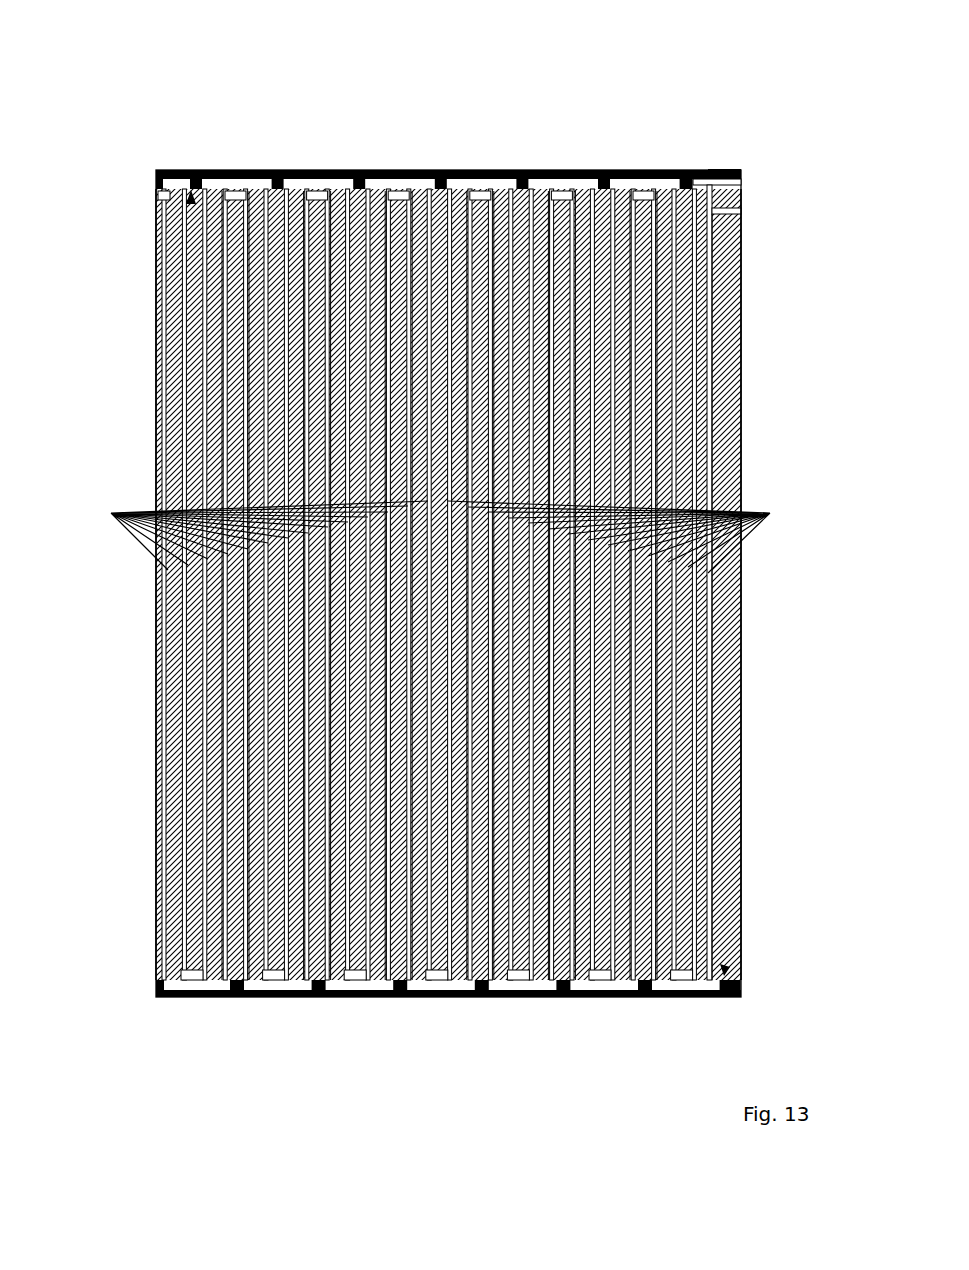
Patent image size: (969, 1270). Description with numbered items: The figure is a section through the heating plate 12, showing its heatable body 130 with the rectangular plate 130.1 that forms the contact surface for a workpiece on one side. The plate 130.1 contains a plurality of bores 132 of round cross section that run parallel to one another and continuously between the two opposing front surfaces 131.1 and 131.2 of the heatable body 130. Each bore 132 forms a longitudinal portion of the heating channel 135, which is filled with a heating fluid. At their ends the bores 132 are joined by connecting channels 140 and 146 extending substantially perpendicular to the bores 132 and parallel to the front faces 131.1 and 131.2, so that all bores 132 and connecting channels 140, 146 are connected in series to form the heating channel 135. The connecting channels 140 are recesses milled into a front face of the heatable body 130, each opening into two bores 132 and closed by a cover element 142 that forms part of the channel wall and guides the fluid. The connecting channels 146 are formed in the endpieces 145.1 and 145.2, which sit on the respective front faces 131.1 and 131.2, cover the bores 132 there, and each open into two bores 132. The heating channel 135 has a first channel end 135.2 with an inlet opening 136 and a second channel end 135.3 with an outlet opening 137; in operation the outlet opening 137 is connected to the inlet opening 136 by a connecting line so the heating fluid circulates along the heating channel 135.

The heating plate 12 is at (760, 26).
The heatable body 130 is at (134, 397).
The plate 130.1 is at (150, 433).
The first front surface 131.1 is at (183, 192).
The second front surface 131.2 is at (719, 960).
The bores 132 is at (434, 535).
The heating channel 135 is at (714, 355).
The first channel end 135.2 is at (733, 226).
The second channel end 135.3 is at (730, 152).
The inlet opening 136 is at (790, 203).
The outlet opening 137 is at (776, 172).
The connecting channels 140 is at (308, 188).
The cover element 142 is at (297, 188).
The first endpiece 145.1 is at (150, 166).
The second endpiece 145.2 is at (150, 987).
The connecting channels 146 is at (207, 185).